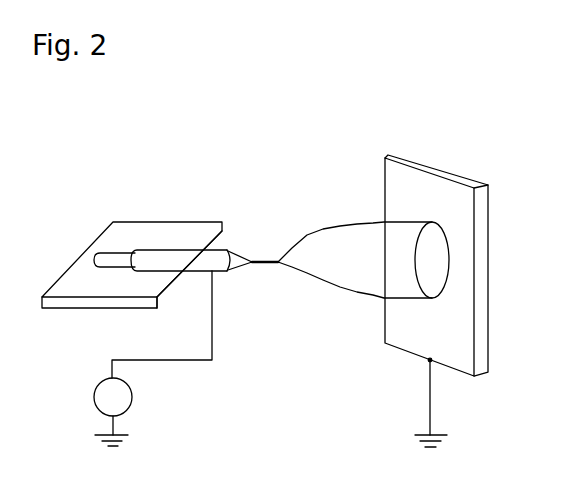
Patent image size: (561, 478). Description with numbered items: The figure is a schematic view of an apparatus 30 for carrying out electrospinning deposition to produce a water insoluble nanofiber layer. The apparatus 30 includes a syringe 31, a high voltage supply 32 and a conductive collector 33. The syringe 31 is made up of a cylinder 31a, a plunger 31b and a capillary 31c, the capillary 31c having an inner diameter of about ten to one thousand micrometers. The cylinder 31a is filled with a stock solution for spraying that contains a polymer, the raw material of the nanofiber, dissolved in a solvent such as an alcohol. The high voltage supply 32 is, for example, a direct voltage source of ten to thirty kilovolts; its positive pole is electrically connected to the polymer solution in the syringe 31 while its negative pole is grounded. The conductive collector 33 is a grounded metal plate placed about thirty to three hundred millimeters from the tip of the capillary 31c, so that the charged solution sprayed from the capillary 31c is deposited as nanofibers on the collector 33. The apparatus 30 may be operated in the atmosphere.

The apparatus 30 is at (343, 152).
The syringe 31 is at (105, 140).
The cylinder 31a is at (173, 250).
The plunger 31b is at (120, 253).
The capillary 31c is at (268, 261).
The high voltage supply 32 is at (94, 398).
The conductive collector 33 is at (395, 347).